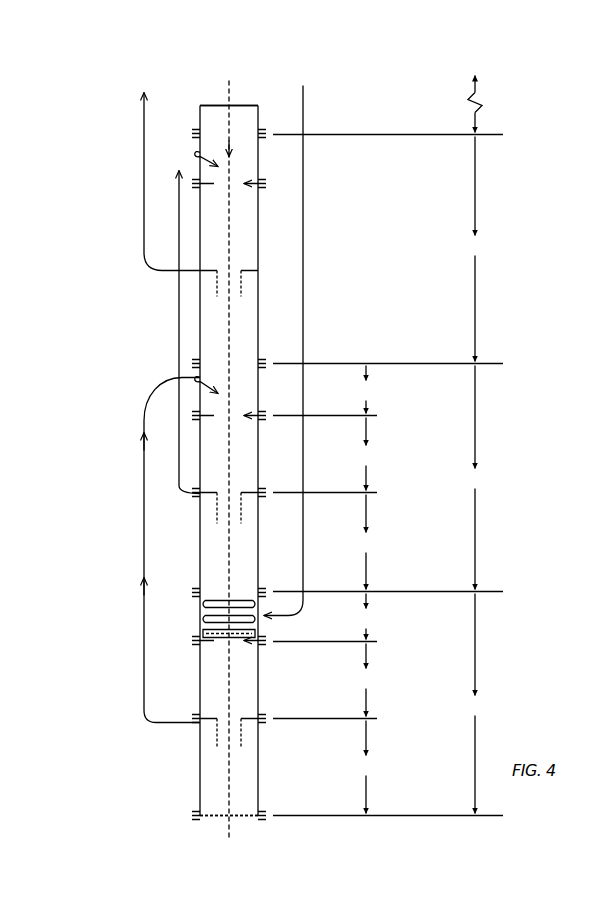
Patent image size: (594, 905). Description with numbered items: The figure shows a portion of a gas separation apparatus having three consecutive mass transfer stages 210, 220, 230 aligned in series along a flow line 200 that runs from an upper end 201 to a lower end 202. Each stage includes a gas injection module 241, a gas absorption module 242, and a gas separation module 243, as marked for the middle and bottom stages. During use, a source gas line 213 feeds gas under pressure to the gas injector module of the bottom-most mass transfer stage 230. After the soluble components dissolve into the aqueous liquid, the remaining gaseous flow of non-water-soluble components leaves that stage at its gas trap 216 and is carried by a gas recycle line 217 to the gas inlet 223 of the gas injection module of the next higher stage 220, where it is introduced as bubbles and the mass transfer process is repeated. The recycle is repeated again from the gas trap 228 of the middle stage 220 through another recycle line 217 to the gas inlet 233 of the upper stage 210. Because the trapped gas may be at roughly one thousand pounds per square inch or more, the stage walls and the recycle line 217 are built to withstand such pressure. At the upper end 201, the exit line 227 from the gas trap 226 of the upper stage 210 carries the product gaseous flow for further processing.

The flow line 200 is at (258, 117).
The upper end 201 is at (200, 105).
The lower end 202 is at (245, 815).
The source gas line 213 is at (303, 128).
The mass transfer stage 210 is at (476, 219).
The mass transfer stage 220 is at (476, 478).
The mass transfer stage 230 is at (476, 704).
The gas injection module 241 is at (366, 503).
The gas absorption module 242 is at (366, 567).
The gas separation module 243 is at (366, 654).
The gas recycle line 217 is at (172, 358).
The gas inlet 223 is at (205, 372).
The gas trap 226 is at (200, 283).
The exit line 227 is at (143, 200).
The gas trap 228 is at (200, 505).
The gas inlet 233 is at (200, 152).
The gas trap 216 is at (207, 732).